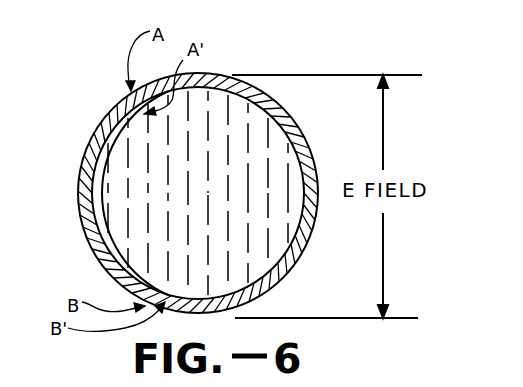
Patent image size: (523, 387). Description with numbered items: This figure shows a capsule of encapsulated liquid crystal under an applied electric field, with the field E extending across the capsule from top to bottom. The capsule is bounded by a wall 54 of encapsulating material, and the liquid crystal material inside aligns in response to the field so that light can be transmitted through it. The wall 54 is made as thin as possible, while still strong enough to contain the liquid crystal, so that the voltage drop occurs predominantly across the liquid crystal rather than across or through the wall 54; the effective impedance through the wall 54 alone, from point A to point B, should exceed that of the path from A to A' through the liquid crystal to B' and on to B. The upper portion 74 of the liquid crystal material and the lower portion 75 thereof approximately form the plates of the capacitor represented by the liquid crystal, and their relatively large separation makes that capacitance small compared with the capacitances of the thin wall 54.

The wall 54 is at (106, 262).
The upper portion 74 is at (243, 115).
The lower portion 75 is at (248, 271).